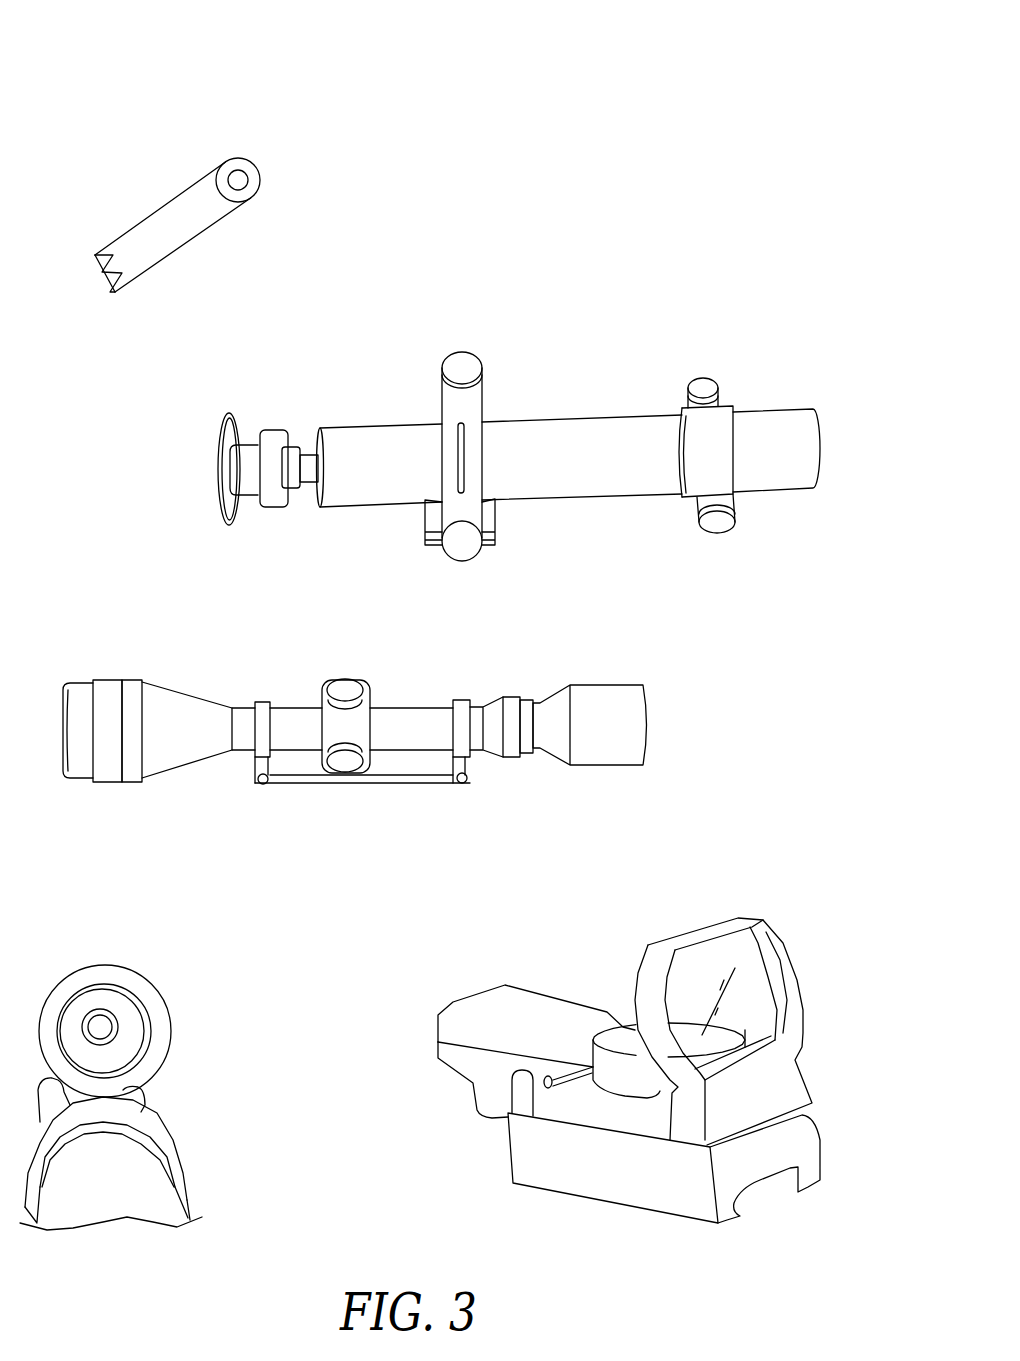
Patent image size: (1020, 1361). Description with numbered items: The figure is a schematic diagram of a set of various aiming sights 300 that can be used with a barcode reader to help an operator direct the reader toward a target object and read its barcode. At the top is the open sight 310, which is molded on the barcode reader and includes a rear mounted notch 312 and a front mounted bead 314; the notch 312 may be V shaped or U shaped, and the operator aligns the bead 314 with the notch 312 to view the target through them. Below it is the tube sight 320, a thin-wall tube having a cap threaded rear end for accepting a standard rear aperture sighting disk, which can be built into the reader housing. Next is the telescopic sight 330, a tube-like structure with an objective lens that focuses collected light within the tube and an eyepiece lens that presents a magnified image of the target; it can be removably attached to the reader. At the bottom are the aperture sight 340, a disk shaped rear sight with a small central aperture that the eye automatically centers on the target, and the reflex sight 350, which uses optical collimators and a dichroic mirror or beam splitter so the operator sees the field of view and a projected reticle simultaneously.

The accessory set 300 is at (728, 41).
The open sight aiming sight 310 is at (314, 173).
The rear mounted notch 312 is at (95, 255).
The front mounted bead 314 is at (230, 158).
The tube sight aiming sight 320 is at (733, 344).
The telescopic sight aiming sight 330 is at (643, 636).
The aperture sight aiming sight 340 is at (202, 998).
The reflex sight aiming sight 350 is at (780, 891).